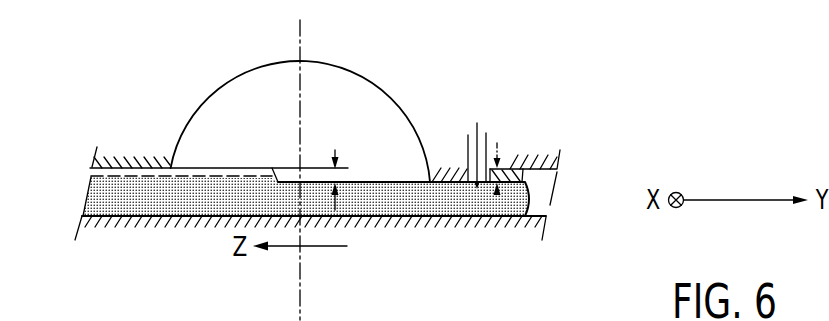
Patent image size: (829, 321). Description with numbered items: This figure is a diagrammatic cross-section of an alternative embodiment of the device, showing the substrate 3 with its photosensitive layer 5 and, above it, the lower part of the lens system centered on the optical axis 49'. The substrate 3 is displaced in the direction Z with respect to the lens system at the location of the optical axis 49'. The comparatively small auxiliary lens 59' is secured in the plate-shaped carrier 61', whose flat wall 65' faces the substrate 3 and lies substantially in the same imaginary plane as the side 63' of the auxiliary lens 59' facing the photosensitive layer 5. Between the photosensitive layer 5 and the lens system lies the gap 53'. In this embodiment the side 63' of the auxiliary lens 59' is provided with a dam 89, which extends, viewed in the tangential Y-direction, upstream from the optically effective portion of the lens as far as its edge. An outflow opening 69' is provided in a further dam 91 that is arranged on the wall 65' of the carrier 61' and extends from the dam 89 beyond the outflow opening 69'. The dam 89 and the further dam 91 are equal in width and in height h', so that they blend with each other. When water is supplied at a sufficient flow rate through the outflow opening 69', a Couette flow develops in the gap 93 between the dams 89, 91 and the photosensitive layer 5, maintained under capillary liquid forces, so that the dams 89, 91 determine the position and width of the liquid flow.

The substrate 3 is at (445, 225).
The photosensitive layer 5 is at (533, 215).
The optical axis 49' is at (328, 168).
The gap 53' is at (306, 237).
The auxiliary lens 59' is at (300, 96).
The carrier 61' is at (326, 140).
The side of the auxiliary lens 63' is at (219, 107).
The wall 65' is at (549, 177).
The outflow opening 69' is at (497, 122).
The dam 89 is at (397, 182).
The further dam 91 is at (442, 182).
The gap 93 is at (410, 197).
The height h' is at (427, 221).